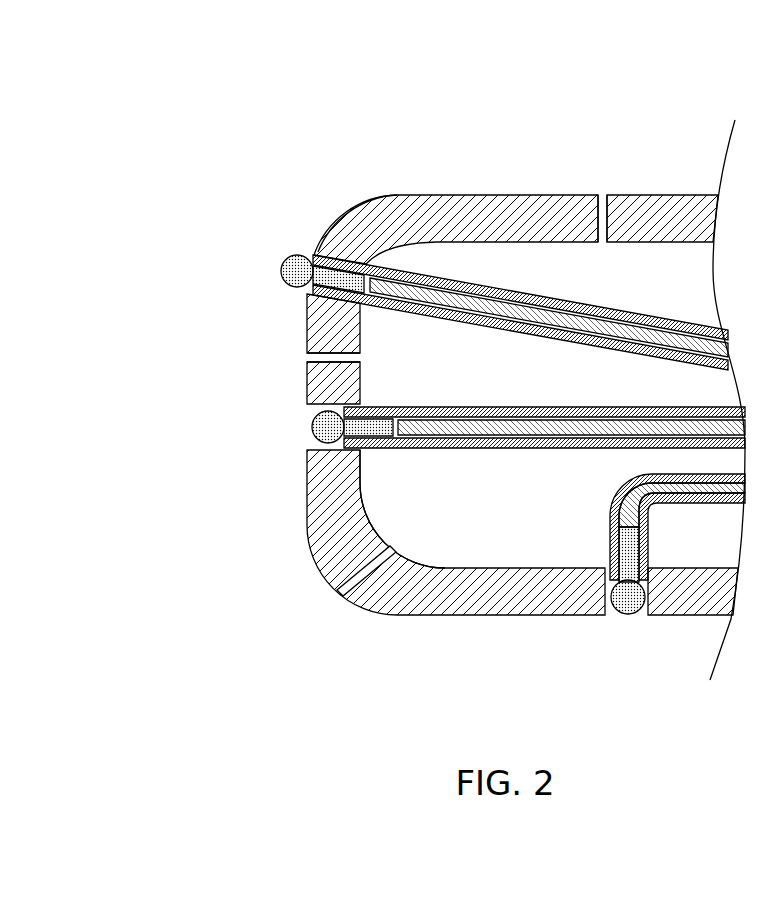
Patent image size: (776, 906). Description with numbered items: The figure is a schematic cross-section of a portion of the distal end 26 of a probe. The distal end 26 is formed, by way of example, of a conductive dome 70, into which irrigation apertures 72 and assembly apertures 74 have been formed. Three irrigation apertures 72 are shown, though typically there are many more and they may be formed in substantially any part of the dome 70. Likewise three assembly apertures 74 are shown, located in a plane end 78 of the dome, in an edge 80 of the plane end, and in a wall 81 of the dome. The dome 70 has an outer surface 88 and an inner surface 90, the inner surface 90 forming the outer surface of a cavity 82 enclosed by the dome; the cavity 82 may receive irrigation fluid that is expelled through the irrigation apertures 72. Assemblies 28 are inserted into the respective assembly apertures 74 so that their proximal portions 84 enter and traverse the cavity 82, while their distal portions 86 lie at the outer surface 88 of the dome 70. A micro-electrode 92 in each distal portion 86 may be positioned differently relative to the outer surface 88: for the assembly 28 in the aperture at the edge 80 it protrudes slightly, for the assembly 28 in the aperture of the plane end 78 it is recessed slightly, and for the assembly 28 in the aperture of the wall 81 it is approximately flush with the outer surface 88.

The distal end 26 is at (552, 194).
The assembly 28 is at (498, 289).
The conductive dome 70 is at (452, 194).
The irrigation aperture 72 is at (603, 194).
The assembly aperture 74 is at (366, 268).
The plane end 78 is at (303, 385).
The edge 80 is at (372, 203).
The wall 81 is at (495, 616).
The cavity 82 is at (476, 376).
The proximal portion 84 is at (641, 318).
The distal portion 86 is at (283, 262).
The outer surface 88 is at (697, 616).
The inner surface 90 is at (362, 468).
The micro-electrode 92 is at (297, 255).